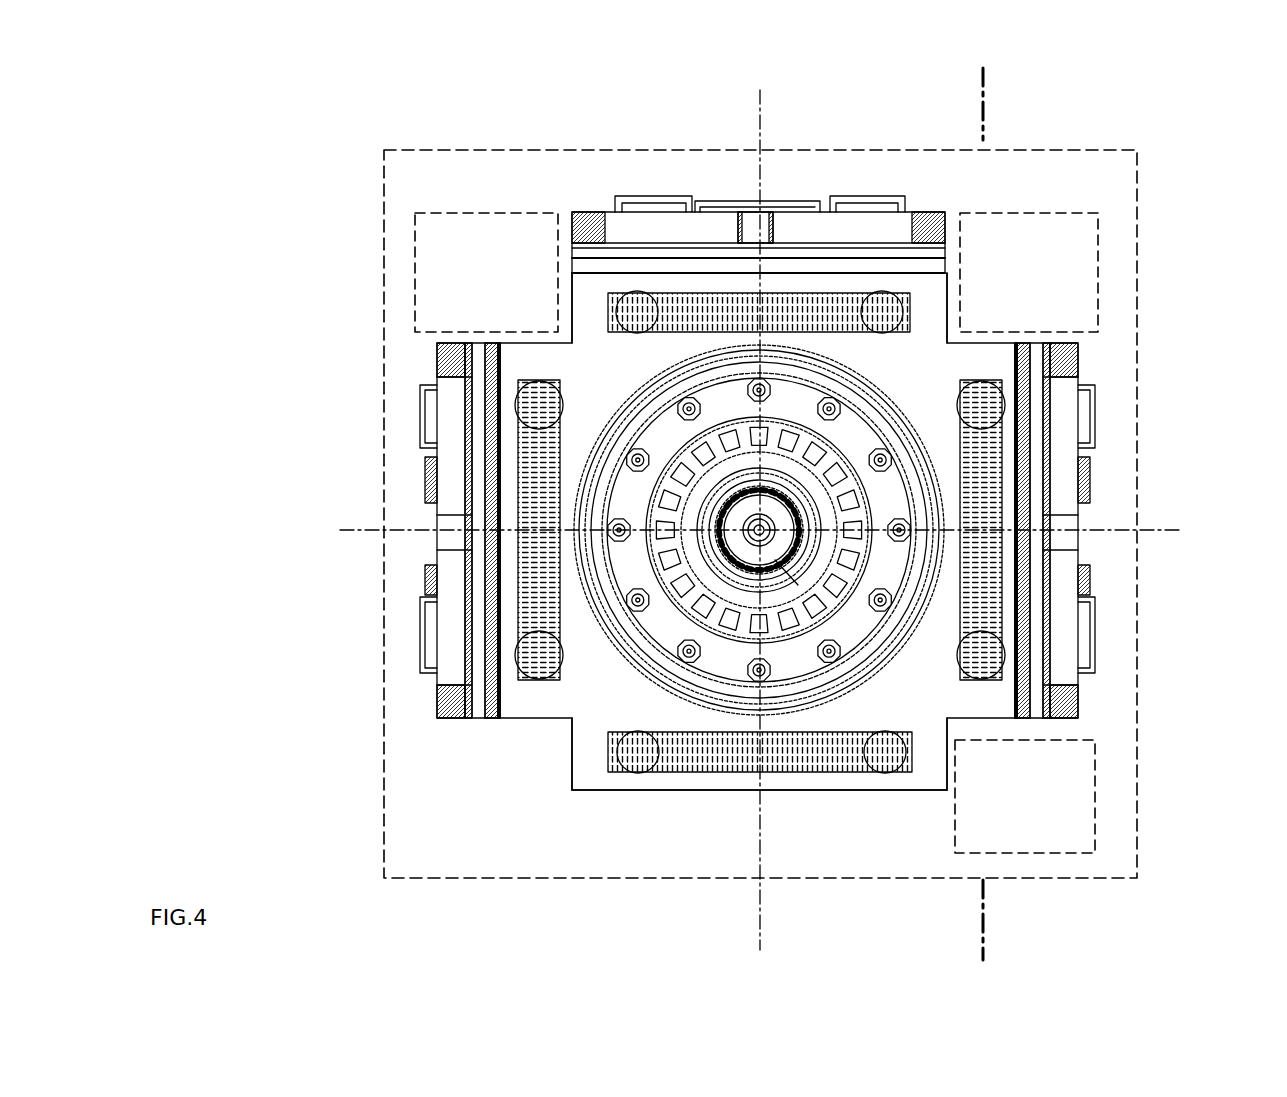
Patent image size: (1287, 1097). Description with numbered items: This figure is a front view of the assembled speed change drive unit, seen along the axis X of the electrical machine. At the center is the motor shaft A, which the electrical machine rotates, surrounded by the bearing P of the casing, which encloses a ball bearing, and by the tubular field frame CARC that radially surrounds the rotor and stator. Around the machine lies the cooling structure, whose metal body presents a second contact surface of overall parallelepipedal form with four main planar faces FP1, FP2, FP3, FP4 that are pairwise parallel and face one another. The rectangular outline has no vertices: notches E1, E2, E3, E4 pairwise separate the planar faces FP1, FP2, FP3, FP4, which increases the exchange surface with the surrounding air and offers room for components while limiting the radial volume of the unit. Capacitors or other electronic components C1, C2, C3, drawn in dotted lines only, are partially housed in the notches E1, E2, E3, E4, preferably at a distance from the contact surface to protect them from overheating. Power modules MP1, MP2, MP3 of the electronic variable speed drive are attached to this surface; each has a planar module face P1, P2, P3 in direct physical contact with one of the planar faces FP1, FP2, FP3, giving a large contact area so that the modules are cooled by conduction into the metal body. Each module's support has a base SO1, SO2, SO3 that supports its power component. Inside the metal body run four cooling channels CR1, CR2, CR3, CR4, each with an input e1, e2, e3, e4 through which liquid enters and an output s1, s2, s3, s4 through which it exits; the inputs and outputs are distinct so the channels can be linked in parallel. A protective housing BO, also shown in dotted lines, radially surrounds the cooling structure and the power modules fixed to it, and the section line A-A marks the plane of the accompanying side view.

The housing / body BO is at (384, 150).
The section plane A-A is at (971, 502).
The notch E1 is at (572, 297).
The notch E2 is at (950, 297).
The notch E3 is at (955, 758).
The notch E4 is at (572, 768).
The base SO1 is at (572, 262).
The base SO2 is at (1022, 335).
The base SO3 is at (490, 722).
The input e1 is at (637, 312).
The input e2 is at (988, 410).
The input e3 is at (530, 650).
The input e4 is at (895, 765).
The cooling channel CR1 is at (666, 286).
The cooling channel CR2 is at (1005, 393).
The cooling channel CR3 is at (518, 676).
The cooling channel CR4 is at (858, 760).
The power module MP1 is at (728, 176).
The power module MP2 is at (1112, 497).
The power module MP3 is at (405, 518).
The planar face FP1 is at (800, 266).
The planar face FP2 is at (1025, 587).
The planar face FP3 is at (493, 572).
The planar face FP4 is at (717, 795).
The planar face of the module P1 is at (838, 276).
The planar face of the module P2 is at (1017, 603).
The planar face of the module P3 is at (502, 602).
The output s1 is at (892, 312).
The output s2 is at (988, 650).
The output s3 is at (525, 403).
The output s4 is at (630, 770).
The capacitor C1 is at (415, 275).
The capacitor C2 is at (1098, 228).
The capacitor C3 is at (1095, 805).
The tubular field frame CARC is at (612, 442).
The bearing P is at (613, 487).
The motor shaft A is at (756, 547).
The axis X is at (792, 584).